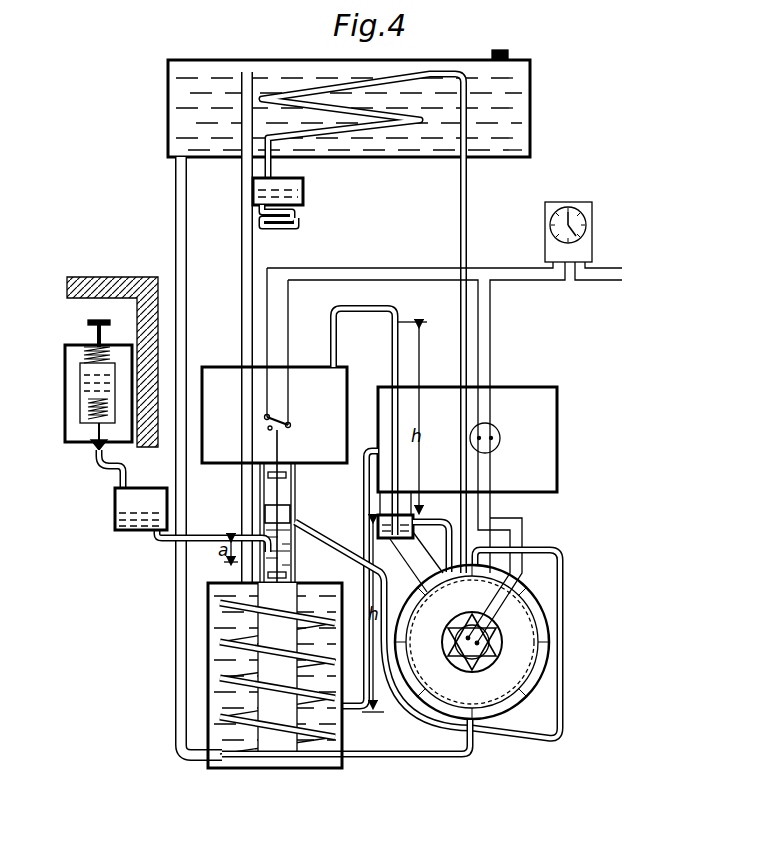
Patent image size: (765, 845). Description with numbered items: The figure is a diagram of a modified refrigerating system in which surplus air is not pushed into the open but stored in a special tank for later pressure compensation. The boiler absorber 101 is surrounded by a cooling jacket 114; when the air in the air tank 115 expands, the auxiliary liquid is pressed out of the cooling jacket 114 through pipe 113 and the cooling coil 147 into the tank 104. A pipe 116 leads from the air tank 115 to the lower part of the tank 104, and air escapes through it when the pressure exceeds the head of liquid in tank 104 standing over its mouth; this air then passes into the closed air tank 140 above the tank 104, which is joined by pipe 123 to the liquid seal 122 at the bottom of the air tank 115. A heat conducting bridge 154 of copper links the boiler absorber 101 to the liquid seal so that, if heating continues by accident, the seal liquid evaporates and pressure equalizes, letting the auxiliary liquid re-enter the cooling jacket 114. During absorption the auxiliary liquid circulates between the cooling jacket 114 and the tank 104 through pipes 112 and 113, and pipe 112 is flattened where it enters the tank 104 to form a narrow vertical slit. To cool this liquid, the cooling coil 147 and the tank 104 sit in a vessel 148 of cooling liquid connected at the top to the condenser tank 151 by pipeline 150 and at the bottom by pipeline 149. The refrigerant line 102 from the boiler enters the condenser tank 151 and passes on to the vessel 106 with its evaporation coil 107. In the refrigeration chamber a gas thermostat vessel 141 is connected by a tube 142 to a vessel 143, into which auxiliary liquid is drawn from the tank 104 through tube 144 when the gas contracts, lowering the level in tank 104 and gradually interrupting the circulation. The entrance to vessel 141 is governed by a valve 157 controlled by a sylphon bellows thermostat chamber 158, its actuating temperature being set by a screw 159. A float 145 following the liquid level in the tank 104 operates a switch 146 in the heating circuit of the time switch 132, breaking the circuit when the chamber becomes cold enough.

The boiler absorber 101 is at (522, 667).
The refrigerant line 102 is at (467, 203).
The tank 104 is at (282, 757).
The vessel 106 is at (305, 192).
The evaporation coil 107 is at (303, 225).
The pipe 112 is at (528, 742).
The pipe 113 is at (418, 758).
The cooling jacket 114 is at (545, 608).
The air tank 115 is at (552, 432).
The pipe 116 is at (363, 516).
The liquid seal 122 is at (415, 518).
The pipe 123 is at (396, 375).
The time switch 132 is at (572, 202).
The closed air tank 140 is at (350, 368).
The gas thermostat vessel 141 is at (76, 438).
The tube 142 is at (124, 467).
The vessel 143 is at (118, 520).
The tube 144 is at (213, 534).
The float 145 is at (292, 508).
The switch 146 is at (284, 421).
The cooling coil 147 is at (243, 694).
The vessel 148 is at (225, 667).
The pipeline 149 is at (180, 602).
The pipeline 150 is at (240, 278).
The condenser tank 151 is at (520, 112).
The heat conducting bridge 154 is at (423, 562).
The valve 157 is at (98, 457).
The sylphon bellows thermostat chamber 158 is at (85, 376).
The screw 159 is at (91, 322).